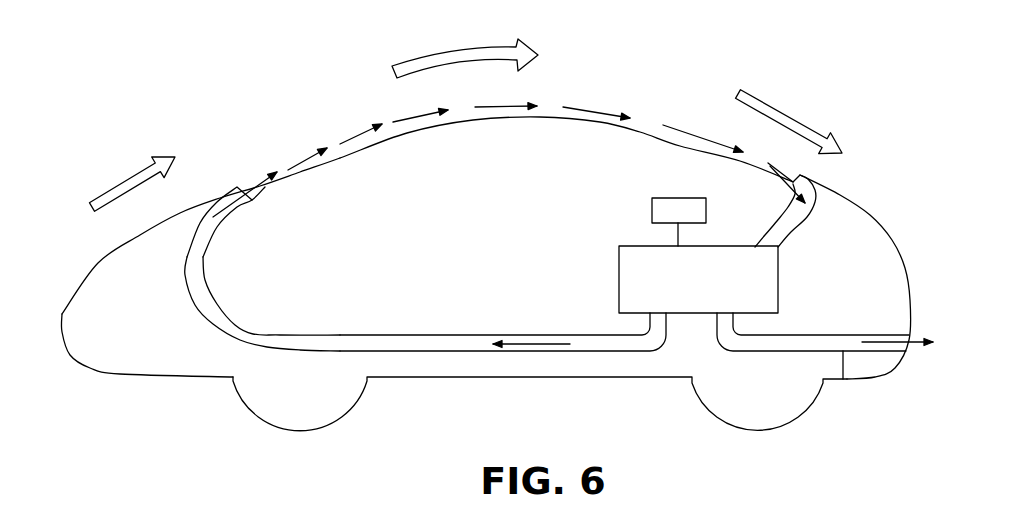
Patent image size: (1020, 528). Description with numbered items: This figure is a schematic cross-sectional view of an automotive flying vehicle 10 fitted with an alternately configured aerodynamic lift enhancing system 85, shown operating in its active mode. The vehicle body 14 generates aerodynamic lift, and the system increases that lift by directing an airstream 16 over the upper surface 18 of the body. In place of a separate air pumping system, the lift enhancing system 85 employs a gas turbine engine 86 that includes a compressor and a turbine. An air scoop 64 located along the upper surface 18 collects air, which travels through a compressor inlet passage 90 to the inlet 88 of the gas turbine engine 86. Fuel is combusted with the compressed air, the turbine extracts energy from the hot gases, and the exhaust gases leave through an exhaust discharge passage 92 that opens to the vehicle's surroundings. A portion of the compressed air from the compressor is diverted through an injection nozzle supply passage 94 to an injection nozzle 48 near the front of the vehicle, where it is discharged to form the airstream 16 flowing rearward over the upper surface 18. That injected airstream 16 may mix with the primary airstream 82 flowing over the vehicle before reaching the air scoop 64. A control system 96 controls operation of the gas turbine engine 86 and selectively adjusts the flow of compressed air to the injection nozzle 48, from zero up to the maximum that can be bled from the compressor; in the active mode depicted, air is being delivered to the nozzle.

The automotive flying vehicle 10 is at (105, 135).
The body 14 is at (205, 200).
The airstream 16 is at (296, 163).
The upper surface 18 is at (642, 140).
The injection nozzle 48 is at (262, 197).
The air scoop 64 is at (790, 174).
The primary airstream 82 is at (429, 57).
The aerodynamic lift enhancing system 85 is at (431, 355).
The gas turbine engine 86 is at (638, 273).
The inlet 88 is at (768, 248).
The compressor inlet passage 90 is at (810, 207).
The exhaust discharge passage 92 is at (847, 381).
The injection nozzle supply passage 94 is at (213, 329).
The control system 96 is at (652, 210).